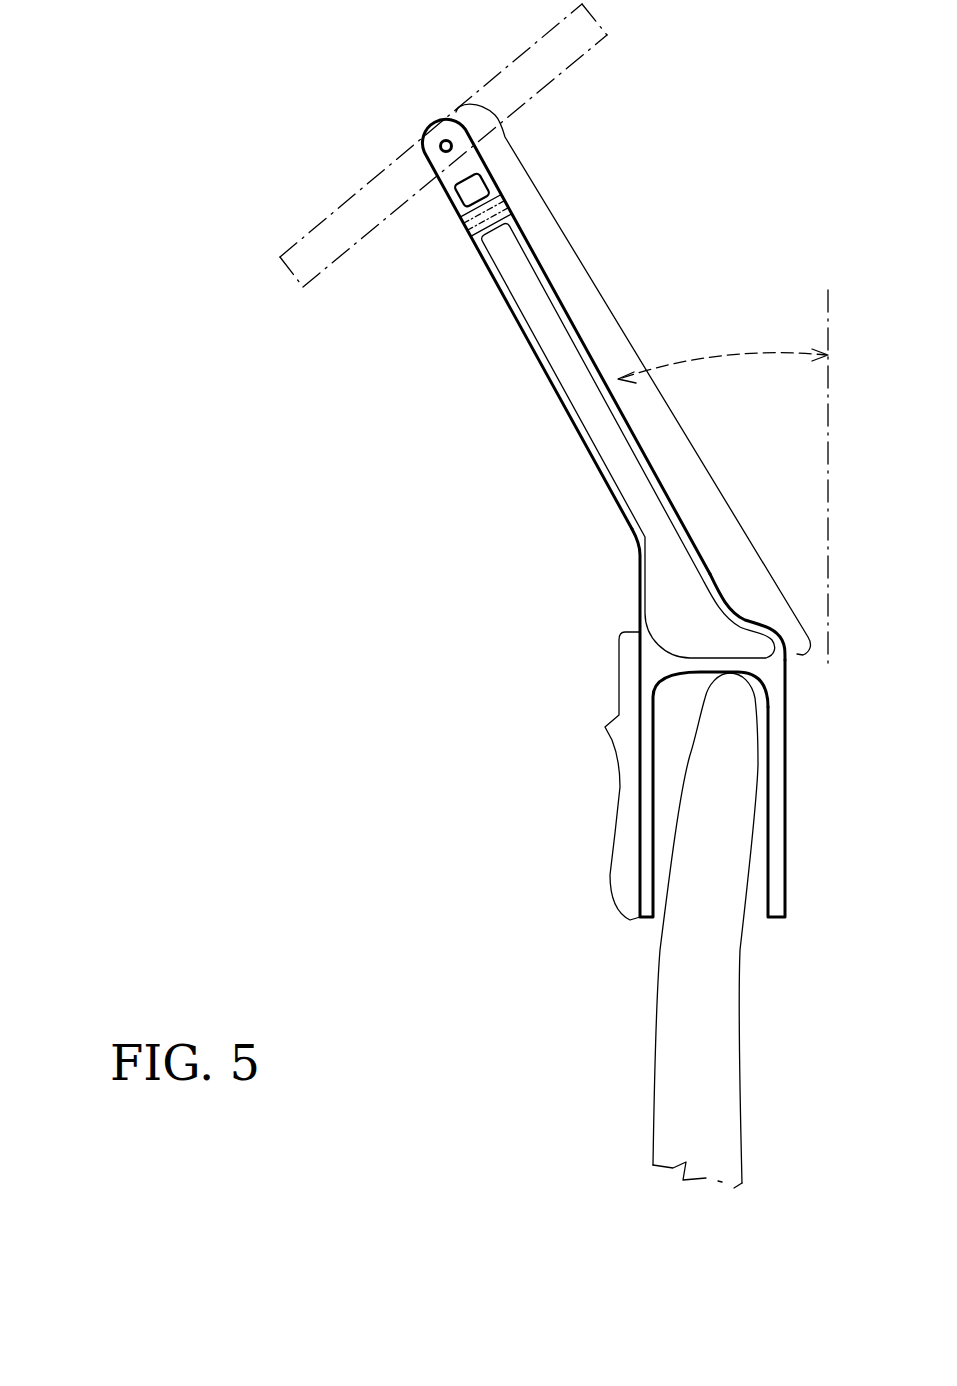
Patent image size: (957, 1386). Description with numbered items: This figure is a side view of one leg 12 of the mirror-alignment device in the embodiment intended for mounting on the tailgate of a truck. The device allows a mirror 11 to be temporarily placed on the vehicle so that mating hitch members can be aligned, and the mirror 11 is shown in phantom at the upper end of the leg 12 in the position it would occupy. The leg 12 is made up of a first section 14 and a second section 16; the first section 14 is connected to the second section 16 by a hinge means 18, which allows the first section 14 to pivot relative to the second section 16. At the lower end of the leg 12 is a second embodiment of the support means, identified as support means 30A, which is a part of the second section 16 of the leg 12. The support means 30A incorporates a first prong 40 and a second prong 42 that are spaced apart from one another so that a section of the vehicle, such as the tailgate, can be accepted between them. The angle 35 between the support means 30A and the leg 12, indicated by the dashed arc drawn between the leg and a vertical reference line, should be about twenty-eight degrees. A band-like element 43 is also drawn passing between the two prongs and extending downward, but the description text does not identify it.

The mirror 11 is at (308, 235).
The leg 12 is at (590, 250).
The first section 14 is at (468, 238).
The second section 16 is at (580, 443).
The hinge means 18 is at (466, 232).
The angle 35 is at (712, 355).
The support means 30A is at (605, 727).
The first prong 40 is at (640, 865).
The second prong 42 is at (785, 902).
The cable 43 is at (652, 1054).